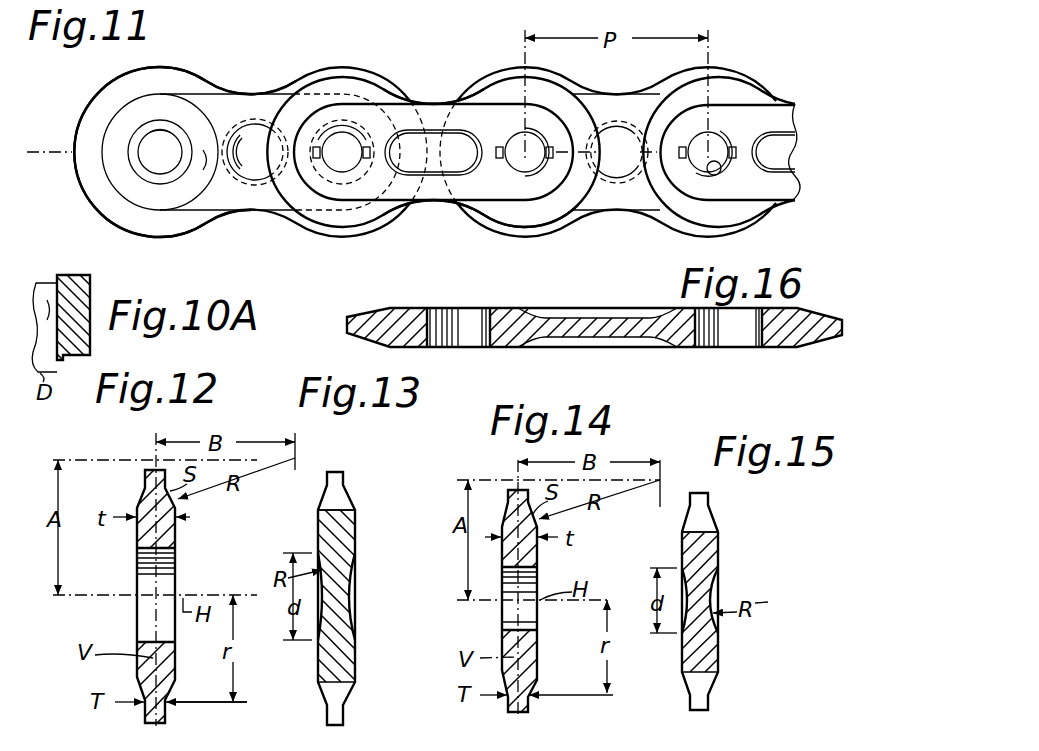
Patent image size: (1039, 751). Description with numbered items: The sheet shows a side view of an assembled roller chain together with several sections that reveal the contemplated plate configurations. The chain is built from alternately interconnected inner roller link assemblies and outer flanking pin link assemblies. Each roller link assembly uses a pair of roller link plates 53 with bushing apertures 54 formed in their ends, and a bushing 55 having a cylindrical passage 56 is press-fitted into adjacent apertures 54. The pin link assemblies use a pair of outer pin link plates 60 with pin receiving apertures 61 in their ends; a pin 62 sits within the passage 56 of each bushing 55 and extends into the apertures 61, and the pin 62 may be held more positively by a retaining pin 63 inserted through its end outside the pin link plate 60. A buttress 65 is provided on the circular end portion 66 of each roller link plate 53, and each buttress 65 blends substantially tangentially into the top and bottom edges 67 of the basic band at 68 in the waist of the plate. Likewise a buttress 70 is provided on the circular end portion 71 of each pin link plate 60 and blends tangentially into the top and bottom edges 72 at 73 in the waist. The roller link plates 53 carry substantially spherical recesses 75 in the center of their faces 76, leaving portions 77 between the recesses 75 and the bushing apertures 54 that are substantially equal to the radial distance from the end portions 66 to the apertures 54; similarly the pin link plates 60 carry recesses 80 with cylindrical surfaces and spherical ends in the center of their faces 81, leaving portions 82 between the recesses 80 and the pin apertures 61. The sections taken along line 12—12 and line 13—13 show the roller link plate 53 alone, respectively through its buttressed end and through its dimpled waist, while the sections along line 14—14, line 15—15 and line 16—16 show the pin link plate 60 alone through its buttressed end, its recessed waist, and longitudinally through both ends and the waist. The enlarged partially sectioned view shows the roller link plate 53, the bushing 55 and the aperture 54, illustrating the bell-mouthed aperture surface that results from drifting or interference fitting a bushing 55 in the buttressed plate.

In FIG. 11, the section line 12— 12 is at (146, 27).
In FIG. 11, the section line 13— 13 is at (251, 70).
In FIG. 11, the section line 14— 14 is at (328, 27).
In FIG. 11, the section line 15— 15 is at (419, 27).
In FIG. 11, the section line 16— 16 is at (262, 138).
In FIG. 11, the roller link plate 53 is at (103, 93).
In FIG. 10A, the roller link plate 53 is at (90, 346).
In FIG. 12, the roller link plate 53 is at (167, 530).
In FIG. 13, the roller link plate 53 is at (347, 646).
In FIG. 11, the bushing aperture 54 is at (133, 133).
In FIG. 10A, the bushing aperture 54 is at (84, 296).
In FIG. 12, the bushing aperture 54 is at (148, 640).
In FIG. 11, the bushing 55 is at (128, 158).
In FIG. 10A, the bushing 55 is at (42, 288).
In FIG. 11, the cylindrical passage 56 is at (160, 130).
In FIG. 11, the pin link plate 60 is at (797, 111).
In FIG. 16, the pin link plate 60 is at (798, 345).
In FIG. 14, the pin link plate 60 is at (530, 673).
In FIG. 15, the pin link plate 60 is at (711, 654).
In FIG. 11, the pin receiving aperture 61 is at (722, 169).
In FIG. 16, the pin receiving aperture 61 is at (483, 340).
In FIG. 14, the pin receiving aperture 61 is at (529, 630).
In FIG. 11, the pin 62 is at (718, 145).
In FIG. 11, the retaining pin 63 is at (735, 156).
In FIG. 11, the buttress 65 is at (108, 214).
In FIG. 13, the buttress 65 is at (340, 489).
In FIG. 11, the circular end portion 66 is at (105, 180).
In FIG. 11, the top and bottom edges 67 is at (196, 93).
In FIG. 11, the blend point in waist 68 is at (255, 91).
In FIG. 13, the blend point in waist 68 is at (336, 509).
In FIG. 11, the buttress 70 is at (527, 225).
In FIG. 15, the buttress 70 is at (700, 508).
In FIG. 11, the circular end portion 71 is at (553, 218).
In FIG. 11, the top and bottom edges 72 is at (457, 102).
In FIG. 11, the blend point in waist 73 is at (430, 102).
In FIG. 15, the blend point in waist 73 is at (705, 531).
In FIG. 11, the spherical recess 75 is at (250, 124).
In FIG. 13, the spherical recess 75 is at (350, 583).
In FIG. 11, the face 76 is at (269, 211).
In FIG. 13, the face 76 is at (356, 540).
In FIG. 11, the portion between recess and aperture 77 is at (204, 173).
In FIG. 11, the recess 80 is at (460, 137).
In FIG. 16, the recess 80 is at (593, 338).
In FIG. 15, the recess 80 is at (715, 588).
In FIG. 11, the face 81 is at (372, 205).
In FIG. 15, the face 81 is at (718, 638).
In FIG. 11, the portion between recess and pin aperture 82 is at (365, 132).